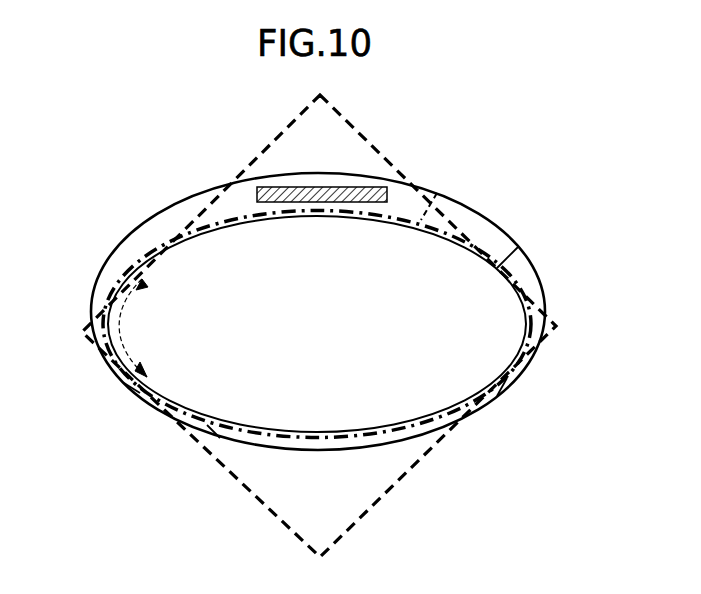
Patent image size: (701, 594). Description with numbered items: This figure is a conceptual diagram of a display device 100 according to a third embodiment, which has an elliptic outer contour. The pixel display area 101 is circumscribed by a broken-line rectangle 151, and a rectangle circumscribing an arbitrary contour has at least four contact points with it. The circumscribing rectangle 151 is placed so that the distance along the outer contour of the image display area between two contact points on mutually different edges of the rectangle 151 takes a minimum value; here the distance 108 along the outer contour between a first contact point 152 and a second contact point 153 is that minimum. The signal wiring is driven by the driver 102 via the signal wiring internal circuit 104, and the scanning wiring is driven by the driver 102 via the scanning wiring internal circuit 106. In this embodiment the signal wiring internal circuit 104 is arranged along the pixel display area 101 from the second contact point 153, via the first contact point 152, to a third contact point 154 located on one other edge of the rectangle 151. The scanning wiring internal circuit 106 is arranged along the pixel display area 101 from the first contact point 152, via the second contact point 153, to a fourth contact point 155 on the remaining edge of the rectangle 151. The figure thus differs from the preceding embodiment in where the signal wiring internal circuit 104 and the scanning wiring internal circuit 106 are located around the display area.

The display device 100 is at (156, 216).
The pixel display area 101 is at (524, 311).
The driver 102 is at (390, 182).
The signal wiring internal circuit 104 is at (434, 205).
The scanning wiring internal circuit 106 is at (218, 433).
The distance 108 is at (128, 310).
The broken-line rectangle 151 is at (410, 465).
The first contact point 152 is at (137, 270).
The second contact point 153 is at (129, 392).
The third contact point 154 is at (518, 258).
The fourth contact point 155 is at (501, 388).